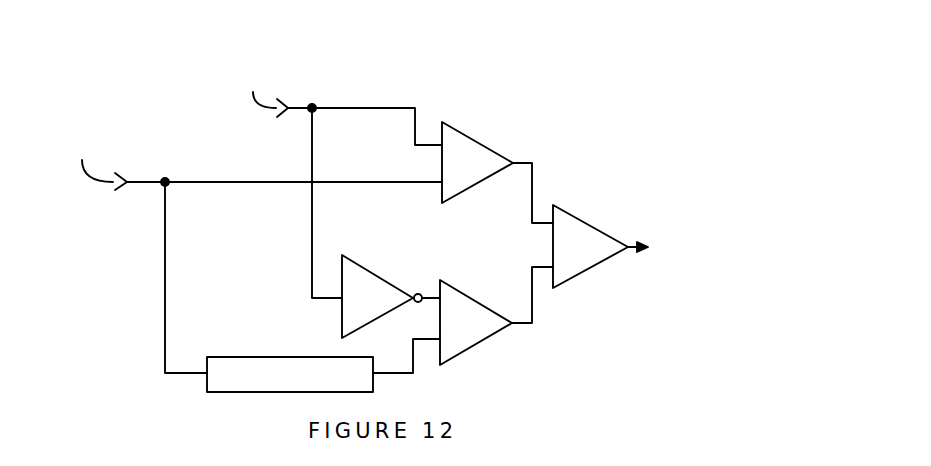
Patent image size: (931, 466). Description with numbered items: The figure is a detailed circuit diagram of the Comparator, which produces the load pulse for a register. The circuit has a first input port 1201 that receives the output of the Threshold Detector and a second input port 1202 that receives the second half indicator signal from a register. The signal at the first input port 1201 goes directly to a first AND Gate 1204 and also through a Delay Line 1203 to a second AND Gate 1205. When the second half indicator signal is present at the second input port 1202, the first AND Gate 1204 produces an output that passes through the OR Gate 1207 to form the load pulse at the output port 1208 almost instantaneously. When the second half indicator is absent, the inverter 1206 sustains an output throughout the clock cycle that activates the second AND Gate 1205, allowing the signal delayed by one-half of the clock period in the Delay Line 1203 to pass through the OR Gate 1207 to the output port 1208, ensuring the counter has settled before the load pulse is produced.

The first input port 1201 is at (244, 233).
The second input port 1202 is at (332, 149).
The Delay Line 1203 is at (272, 357).
The first AND Gate 1204 is at (465, 135).
The second AND Gate 1205 is at (455, 289).
The inverter 1206 is at (360, 266).
The OR Gate 1207 is at (570, 214).
The output port 1208 is at (632, 242).